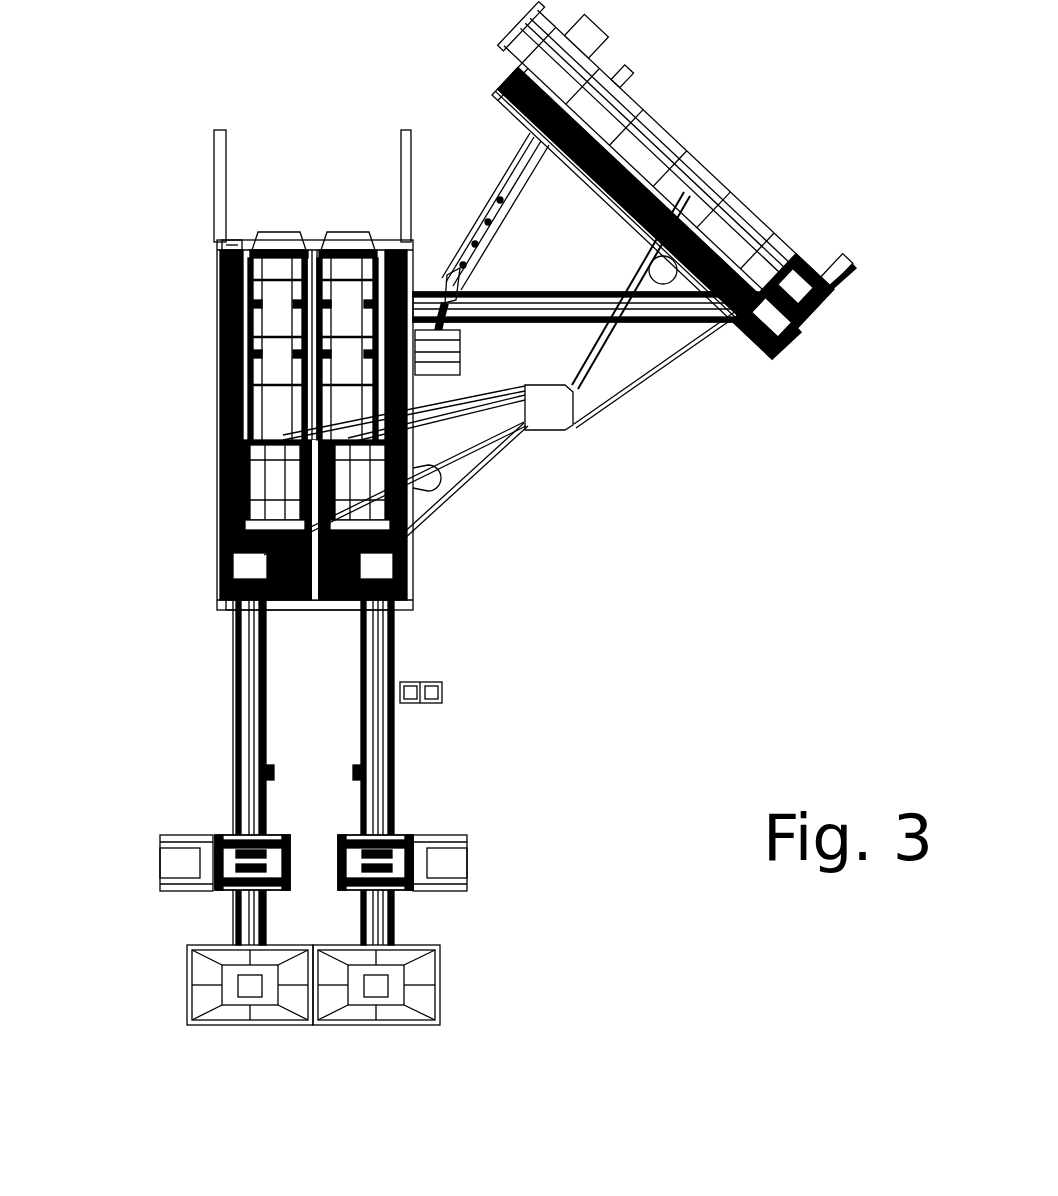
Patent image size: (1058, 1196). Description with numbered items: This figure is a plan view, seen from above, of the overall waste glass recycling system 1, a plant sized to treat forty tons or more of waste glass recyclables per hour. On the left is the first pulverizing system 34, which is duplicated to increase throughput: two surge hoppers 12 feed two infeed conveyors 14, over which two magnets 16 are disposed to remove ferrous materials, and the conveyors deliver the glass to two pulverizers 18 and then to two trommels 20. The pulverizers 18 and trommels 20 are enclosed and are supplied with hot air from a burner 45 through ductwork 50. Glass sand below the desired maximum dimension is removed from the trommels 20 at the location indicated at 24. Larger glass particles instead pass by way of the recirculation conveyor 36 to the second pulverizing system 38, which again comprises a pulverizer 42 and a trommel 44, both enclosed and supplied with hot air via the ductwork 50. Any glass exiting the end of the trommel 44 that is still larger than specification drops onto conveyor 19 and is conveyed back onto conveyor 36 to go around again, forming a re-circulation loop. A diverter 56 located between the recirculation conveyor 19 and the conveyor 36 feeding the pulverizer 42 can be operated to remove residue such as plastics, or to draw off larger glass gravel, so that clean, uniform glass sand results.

The apparatus 1 is at (210, 250).
The surge hoppers 12 is at (185, 995).
The infeed conveyors 14 is at (236, 769).
The magnets 16 is at (160, 870).
The pulverizers 18 is at (250, 563).
The recirculation conveyor 19 is at (494, 186).
The trommels 20 is at (355, 358).
The glass sand removal location 24 is at (205, 417).
The first pulverizing system 34 is at (218, 622).
The recirculation conveyor 36 is at (655, 325).
The second pulverizing system 38 is at (800, 345).
The pulverizer 42 is at (815, 278).
The trommel 44 is at (622, 137).
The burner 45 is at (578, 433).
The ductwork 50 is at (602, 348).
The diverter 56 is at (445, 270).